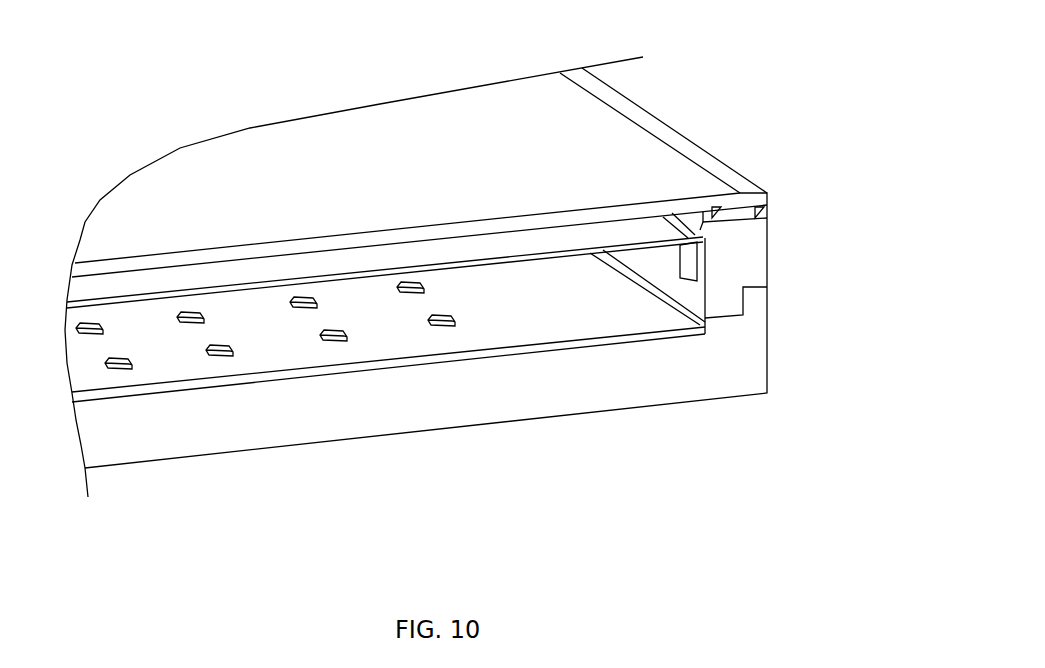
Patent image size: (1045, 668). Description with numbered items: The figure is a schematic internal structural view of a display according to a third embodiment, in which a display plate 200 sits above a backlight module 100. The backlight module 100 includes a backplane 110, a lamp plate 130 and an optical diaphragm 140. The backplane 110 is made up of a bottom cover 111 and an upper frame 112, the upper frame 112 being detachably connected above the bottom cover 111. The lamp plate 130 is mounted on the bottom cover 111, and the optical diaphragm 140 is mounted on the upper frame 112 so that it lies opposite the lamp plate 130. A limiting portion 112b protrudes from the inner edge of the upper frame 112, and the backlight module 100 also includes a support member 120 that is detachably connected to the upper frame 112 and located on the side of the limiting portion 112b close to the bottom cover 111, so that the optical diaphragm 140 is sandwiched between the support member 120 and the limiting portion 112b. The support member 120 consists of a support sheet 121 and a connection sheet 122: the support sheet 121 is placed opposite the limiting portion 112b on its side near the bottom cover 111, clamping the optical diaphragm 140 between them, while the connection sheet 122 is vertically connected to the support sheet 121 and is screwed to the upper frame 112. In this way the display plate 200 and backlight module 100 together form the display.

The backlight module 100 is at (437, 310).
The backplane 110 is at (446, 323).
The bottom cover 111 is at (535, 385).
The upper frame 112 is at (745, 243).
The limiting portion 112b is at (700, 230).
The support member 120 is at (733, 329).
The support sheet 121 is at (684, 238).
The connection sheet 122 is at (707, 277).
The lamp plate 130 is at (275, 355).
The optical diaphragm 140 is at (430, 272).
The display plate 200 is at (318, 193).